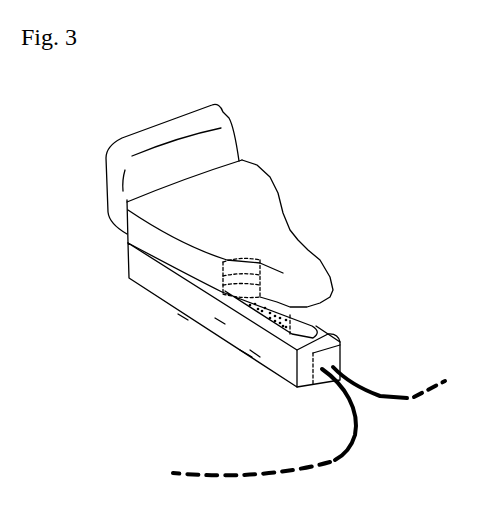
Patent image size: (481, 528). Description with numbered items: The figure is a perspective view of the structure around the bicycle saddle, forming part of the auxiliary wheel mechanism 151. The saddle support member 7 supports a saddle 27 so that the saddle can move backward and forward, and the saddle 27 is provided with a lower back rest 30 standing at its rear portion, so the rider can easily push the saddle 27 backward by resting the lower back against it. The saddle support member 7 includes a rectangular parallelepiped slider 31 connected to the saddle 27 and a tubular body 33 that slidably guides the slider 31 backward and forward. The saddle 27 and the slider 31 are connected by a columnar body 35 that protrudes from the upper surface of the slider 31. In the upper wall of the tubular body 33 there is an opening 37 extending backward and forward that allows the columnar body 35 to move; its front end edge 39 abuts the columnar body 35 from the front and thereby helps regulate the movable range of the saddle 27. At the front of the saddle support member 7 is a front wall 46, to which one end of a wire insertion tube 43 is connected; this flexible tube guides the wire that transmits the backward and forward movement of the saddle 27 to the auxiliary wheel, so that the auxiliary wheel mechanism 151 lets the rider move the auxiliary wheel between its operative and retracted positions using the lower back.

The lower back rest 30 is at (123, 140).
The saddle 27 is at (237, 195).
The columnar body 35 is at (273, 257).
The tubular body 33 is at (158, 290).
The opening 37 is at (313, 320).
The front wall 46 is at (327, 360).
The wire insertion tube 43 is at (383, 405).
The front end edge 39 is at (257, 370).
The auxiliary wheel mechanism 151 is at (247, 352).
The slider 31 is at (220, 320).
The saddle support member 7 is at (183, 317).